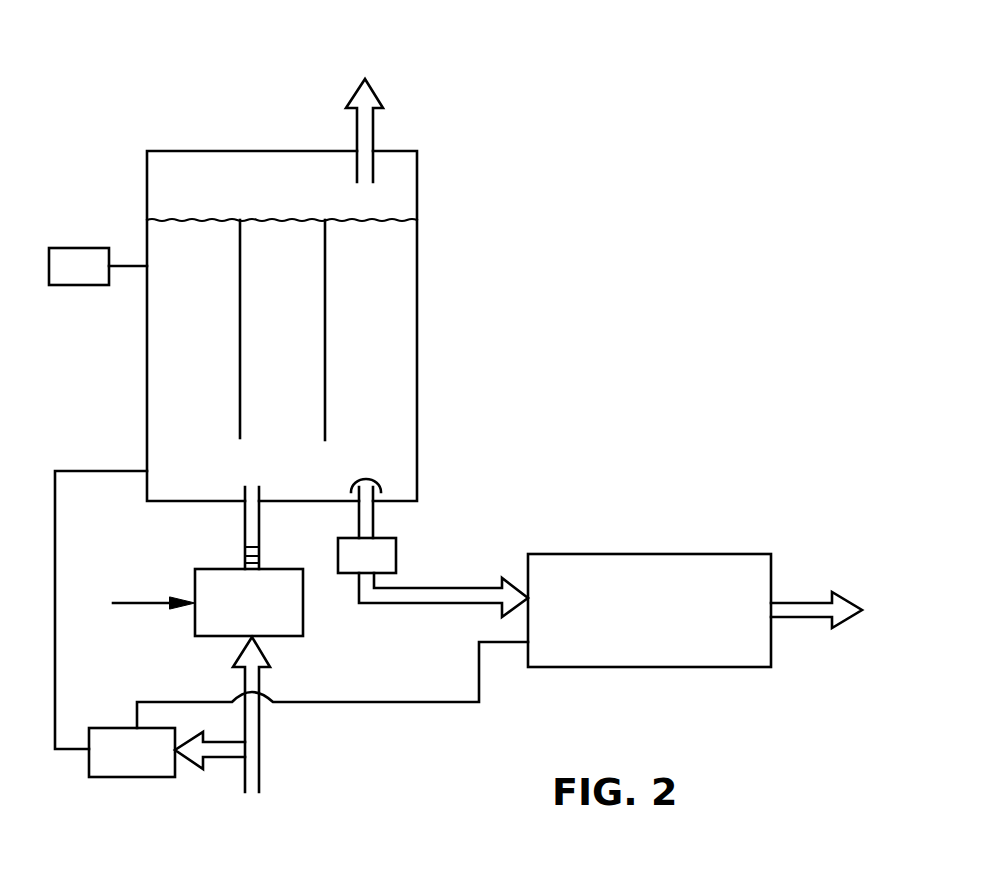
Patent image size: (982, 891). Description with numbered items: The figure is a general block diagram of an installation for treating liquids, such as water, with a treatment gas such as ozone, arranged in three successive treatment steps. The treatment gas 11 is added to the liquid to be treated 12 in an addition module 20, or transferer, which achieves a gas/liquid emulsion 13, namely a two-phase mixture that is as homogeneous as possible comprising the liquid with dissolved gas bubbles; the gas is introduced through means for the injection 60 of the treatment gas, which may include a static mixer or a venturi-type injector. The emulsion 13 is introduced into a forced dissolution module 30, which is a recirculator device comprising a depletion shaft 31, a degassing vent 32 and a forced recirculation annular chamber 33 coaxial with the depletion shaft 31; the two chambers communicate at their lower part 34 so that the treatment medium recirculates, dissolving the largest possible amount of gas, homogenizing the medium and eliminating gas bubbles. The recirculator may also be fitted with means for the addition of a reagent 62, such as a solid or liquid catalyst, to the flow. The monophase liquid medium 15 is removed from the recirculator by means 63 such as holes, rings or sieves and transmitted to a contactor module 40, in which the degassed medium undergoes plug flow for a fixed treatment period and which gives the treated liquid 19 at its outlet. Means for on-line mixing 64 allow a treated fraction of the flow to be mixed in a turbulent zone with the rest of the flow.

The treatment gas 11 is at (131, 600).
The liquid to be treated 12 is at (243, 680).
The gas/liquid emulsion 13 is at (252, 527).
The monophase liquid medium 15 is at (452, 588).
The treated liquid 19 is at (808, 600).
The addition module 20 is at (303, 621).
The forced dissolution module 30 is at (417, 338).
The depletion shaft 31 is at (300, 288).
The degassing vent 32 is at (373, 133).
The forced recirculation annular chamber 33 is at (393, 410).
The lower part 34 is at (203, 175).
The contactor module 40 is at (611, 553).
The means for the injection of the treatment gas 60 is at (245, 555).
The means for the addition of a reagent 62 is at (79, 247).
The means for the removal of the treated liquid 63 is at (338, 548).
The means for on-line mixing 64 is at (103, 728).